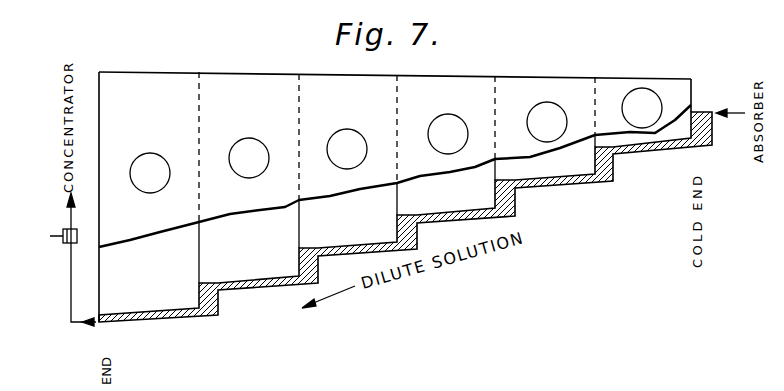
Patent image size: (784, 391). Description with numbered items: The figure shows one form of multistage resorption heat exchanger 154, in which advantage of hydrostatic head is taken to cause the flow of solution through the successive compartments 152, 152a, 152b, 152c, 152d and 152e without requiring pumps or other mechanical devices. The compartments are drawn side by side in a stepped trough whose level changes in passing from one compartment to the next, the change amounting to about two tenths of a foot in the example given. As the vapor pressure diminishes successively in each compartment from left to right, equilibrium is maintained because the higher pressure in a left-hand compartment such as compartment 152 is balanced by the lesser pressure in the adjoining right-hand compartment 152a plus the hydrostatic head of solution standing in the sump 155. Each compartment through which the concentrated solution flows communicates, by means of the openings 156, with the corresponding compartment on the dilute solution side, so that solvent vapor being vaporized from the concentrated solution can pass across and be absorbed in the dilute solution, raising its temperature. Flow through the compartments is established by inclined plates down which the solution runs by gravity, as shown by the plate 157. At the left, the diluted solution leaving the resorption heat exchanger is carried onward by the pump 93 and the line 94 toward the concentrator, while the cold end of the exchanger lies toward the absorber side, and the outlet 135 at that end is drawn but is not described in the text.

The compartment 152 is at (149, 197).
The compartment 152a is at (261, 161).
The compartment 152b is at (359, 145).
The compartment 152c is at (458, 128).
The compartment 152d is at (556, 112).
The compartment 152e is at (647, 95).
The resorption heat exchanger 154 is at (238, 61).
The sump 155 is at (199, 294).
The openings 156 is at (396, 140).
The plate 157 is at (248, 290).
The outlet to absorber 135 is at (742, 98).
The pump 93 is at (67, 244).
The line 94 is at (70, 305).